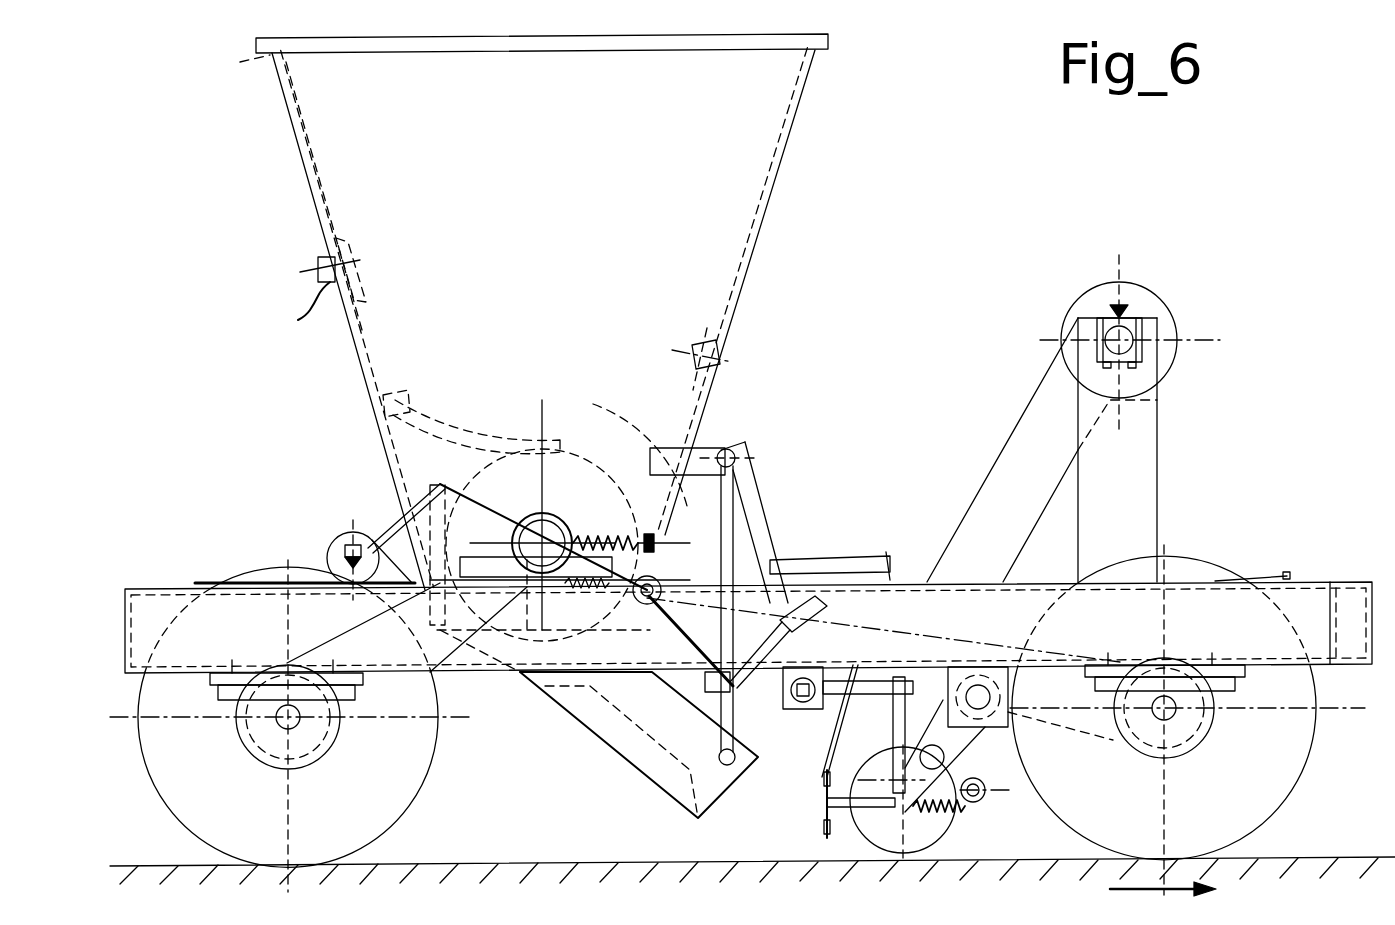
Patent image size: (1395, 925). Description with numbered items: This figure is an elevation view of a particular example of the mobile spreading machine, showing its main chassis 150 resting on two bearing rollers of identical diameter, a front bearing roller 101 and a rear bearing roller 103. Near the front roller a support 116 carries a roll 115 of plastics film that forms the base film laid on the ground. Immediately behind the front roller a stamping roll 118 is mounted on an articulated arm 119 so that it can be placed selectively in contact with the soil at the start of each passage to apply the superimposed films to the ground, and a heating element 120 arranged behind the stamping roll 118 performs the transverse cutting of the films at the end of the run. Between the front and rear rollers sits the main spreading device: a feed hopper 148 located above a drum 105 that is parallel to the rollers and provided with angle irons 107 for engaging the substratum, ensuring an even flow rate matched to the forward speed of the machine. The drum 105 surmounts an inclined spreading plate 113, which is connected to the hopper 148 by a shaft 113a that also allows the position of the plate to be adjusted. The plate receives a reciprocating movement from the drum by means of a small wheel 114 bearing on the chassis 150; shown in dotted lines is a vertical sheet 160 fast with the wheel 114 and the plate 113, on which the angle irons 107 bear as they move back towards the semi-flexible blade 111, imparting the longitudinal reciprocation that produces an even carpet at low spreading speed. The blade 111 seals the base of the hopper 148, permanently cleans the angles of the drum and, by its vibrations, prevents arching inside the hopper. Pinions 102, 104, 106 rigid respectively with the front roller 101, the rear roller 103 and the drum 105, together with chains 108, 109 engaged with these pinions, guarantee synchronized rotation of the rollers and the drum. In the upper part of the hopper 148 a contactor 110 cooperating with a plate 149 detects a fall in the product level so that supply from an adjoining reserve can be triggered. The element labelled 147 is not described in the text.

The front bearing roller 101 is at (1265, 800).
The pinion 102 is at (1186, 740).
The rear bearing roller 103 is at (200, 814).
The pinion 104 is at (262, 745).
The drum 105 is at (612, 470).
The pinion 106 is at (538, 516).
The angle irons 107 is at (462, 447).
The chain 108 is at (1098, 738).
The chain 109 is at (398, 686).
The contactor 110 is at (318, 263).
The flexible blade 111 is at (430, 405).
The inclined spreading plate 113 is at (598, 742).
The shaft 113a is at (742, 486).
The small wheel 114 is at (345, 540).
The roll of plastics film 115 is at (1147, 295).
The support 116 is at (1140, 465).
The stamping roll 118 is at (935, 826).
The articulated arm 119 is at (858, 690).
The heating element 120 is at (828, 830).
The lever mechanism 147 is at (990, 772).
The feed hopper 148 is at (790, 182).
The plate 149 is at (335, 220).
The main chassis 150 is at (120, 685).
The vertical sheet 160 is at (387, 512).